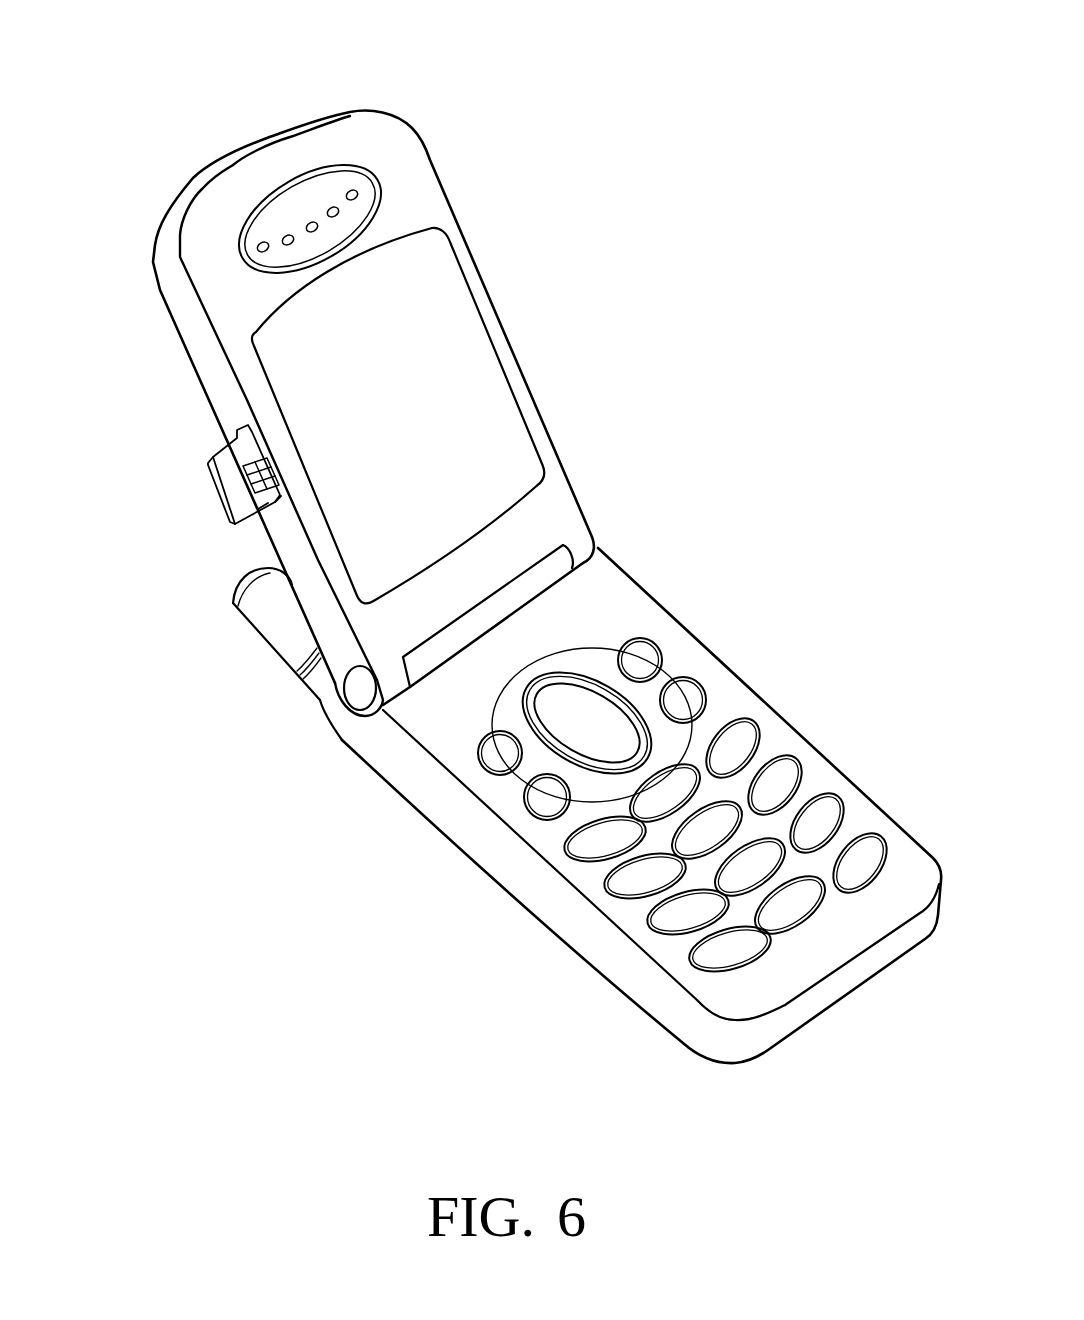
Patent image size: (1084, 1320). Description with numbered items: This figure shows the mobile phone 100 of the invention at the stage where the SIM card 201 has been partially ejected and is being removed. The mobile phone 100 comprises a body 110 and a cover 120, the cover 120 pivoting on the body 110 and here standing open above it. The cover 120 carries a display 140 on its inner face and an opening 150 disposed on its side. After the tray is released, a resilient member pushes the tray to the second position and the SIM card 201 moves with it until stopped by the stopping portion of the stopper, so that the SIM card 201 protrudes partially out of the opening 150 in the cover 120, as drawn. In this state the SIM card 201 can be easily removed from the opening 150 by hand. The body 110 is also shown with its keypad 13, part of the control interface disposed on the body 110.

The mobile phone 100 is at (146, 35).
The body 110 is at (550, 905).
The cover 120 is at (183, 308).
The display 140 is at (465, 365).
The SIM card 201 is at (235, 485).
The opening 150 is at (263, 510).
The keypad keys 13 is at (737, 747).